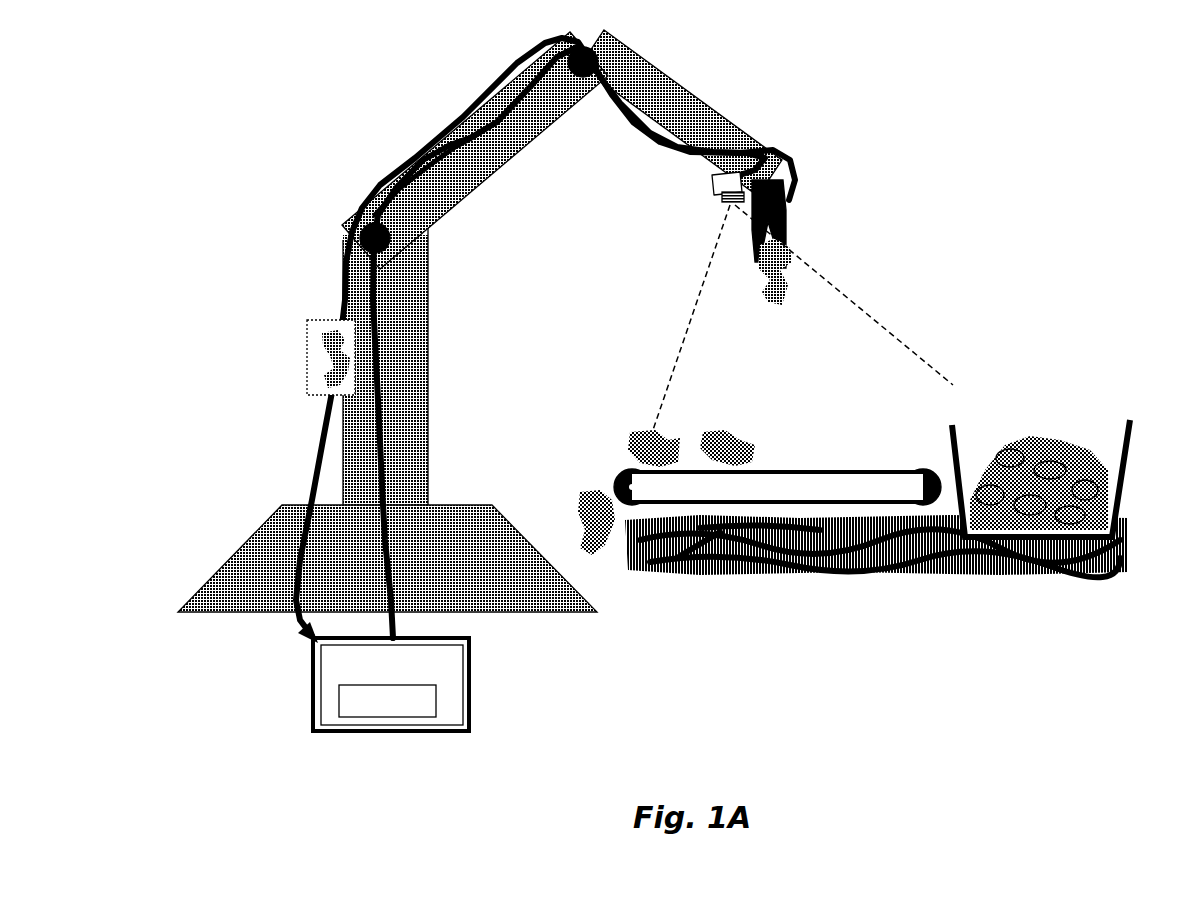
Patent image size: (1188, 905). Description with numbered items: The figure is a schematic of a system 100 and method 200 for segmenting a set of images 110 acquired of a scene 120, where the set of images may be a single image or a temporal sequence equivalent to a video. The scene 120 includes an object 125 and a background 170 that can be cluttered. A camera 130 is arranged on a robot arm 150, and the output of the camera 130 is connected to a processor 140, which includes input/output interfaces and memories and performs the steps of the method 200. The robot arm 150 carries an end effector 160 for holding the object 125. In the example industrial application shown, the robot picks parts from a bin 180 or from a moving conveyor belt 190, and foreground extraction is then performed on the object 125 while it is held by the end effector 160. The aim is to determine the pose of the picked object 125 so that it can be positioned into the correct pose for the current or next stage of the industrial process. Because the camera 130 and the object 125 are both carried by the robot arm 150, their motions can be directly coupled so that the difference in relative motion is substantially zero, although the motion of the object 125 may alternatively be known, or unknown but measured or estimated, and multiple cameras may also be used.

The system 100 is at (710, 867).
The set of images 110 is at (326, 318).
The scene 120 is at (826, 305).
The object 125 is at (790, 283).
The camera 130 is at (712, 183).
The processor 140 is at (455, 675).
The robot arm 150 is at (668, 93).
The end effector 160 is at (783, 202).
The background 170 is at (1160, 598).
The bin 180 is at (958, 425).
The conveyor belt 190 is at (822, 470).
The method 200 is at (358, 715).